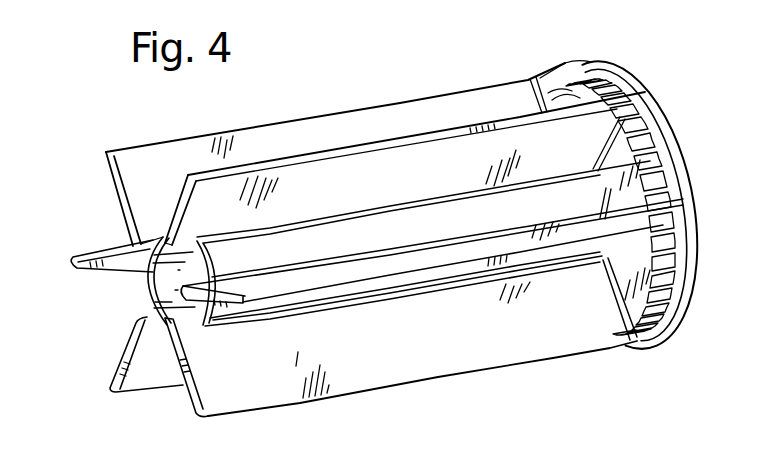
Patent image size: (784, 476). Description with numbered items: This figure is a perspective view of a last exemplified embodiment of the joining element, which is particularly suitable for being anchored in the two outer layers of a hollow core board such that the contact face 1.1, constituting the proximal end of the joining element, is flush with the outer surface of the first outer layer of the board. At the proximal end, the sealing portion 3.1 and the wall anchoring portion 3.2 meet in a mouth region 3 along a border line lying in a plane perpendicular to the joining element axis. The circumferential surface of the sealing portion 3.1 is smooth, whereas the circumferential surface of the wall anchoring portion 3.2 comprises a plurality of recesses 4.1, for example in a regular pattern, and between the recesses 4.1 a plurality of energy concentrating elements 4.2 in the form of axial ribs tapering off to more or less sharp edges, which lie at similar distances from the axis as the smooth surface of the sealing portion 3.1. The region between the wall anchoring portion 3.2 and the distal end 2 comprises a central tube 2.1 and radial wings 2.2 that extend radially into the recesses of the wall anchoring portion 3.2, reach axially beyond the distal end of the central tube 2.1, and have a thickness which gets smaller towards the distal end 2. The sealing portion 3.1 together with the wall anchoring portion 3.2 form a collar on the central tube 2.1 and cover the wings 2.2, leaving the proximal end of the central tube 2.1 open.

The contact face 1.1 is at (671, 122).
The distal end 2 is at (106, 219).
The central tube 2.1 is at (170, 282).
The radial wings 2.2 is at (245, 388).
The mouth region 3 is at (565, 62).
The sealing portion 3.1 is at (683, 185).
The wall anchoring portion 3.2 is at (676, 263).
The recesses 4.1 is at (535, 325).
The energy concentrating elements 4.2 is at (438, 378).